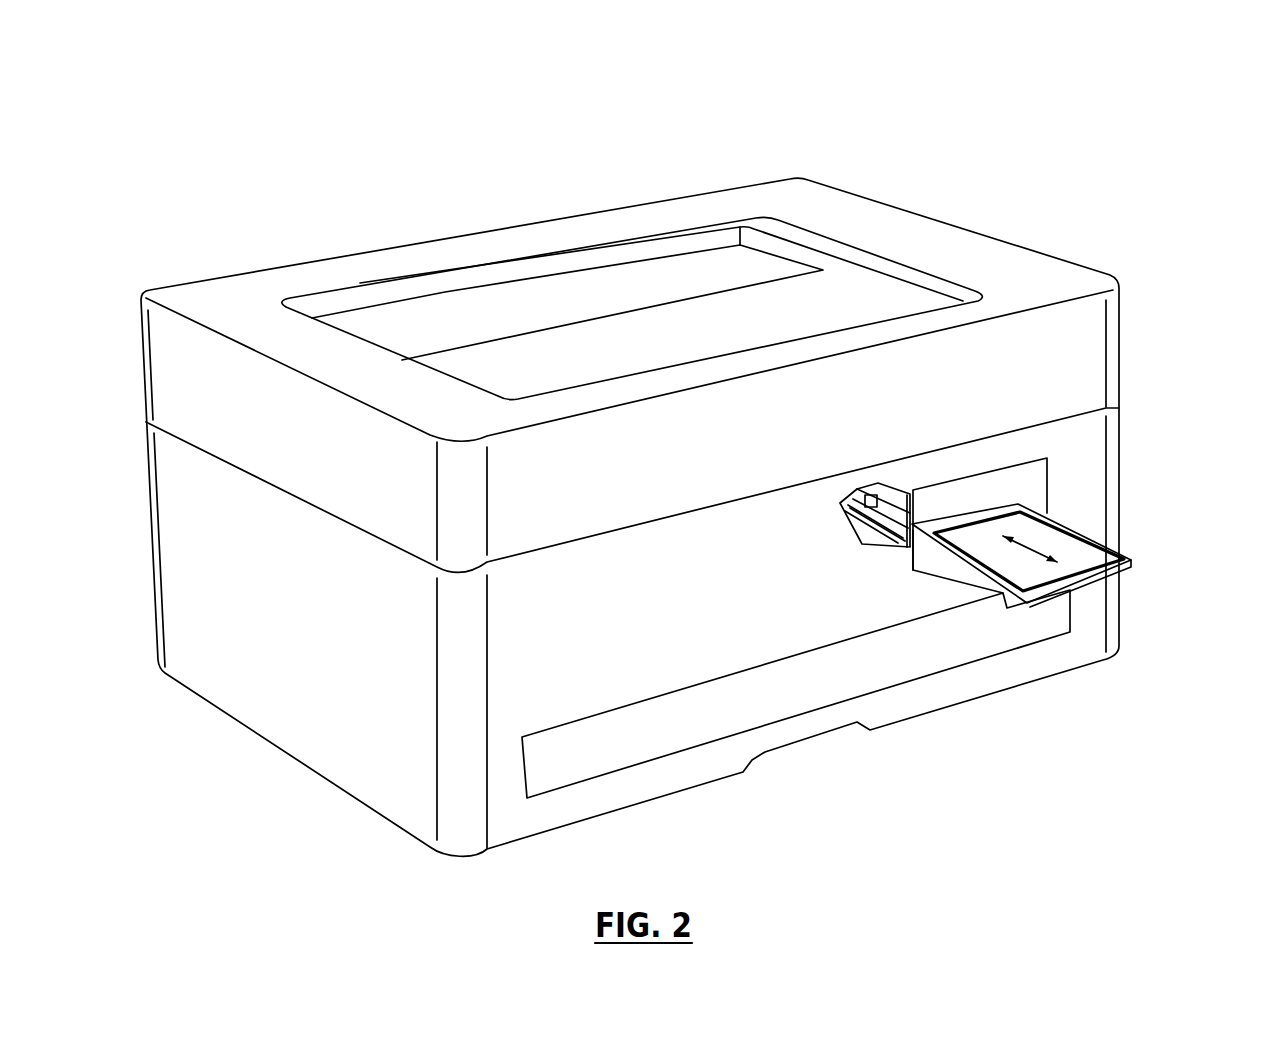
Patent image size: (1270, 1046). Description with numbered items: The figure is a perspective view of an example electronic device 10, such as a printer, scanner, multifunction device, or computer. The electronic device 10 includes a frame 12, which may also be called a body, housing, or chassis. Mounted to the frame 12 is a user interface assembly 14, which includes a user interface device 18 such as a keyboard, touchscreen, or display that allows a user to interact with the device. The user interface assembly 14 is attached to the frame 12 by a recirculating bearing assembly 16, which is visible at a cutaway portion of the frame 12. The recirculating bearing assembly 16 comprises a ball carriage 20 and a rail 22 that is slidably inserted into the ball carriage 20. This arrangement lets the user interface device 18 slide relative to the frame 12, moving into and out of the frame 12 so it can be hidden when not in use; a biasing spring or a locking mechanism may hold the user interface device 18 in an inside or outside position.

The electronic device 10 is at (298, 125).
The frame 12 is at (1077, 443).
The user interface assembly 14 is at (1098, 604).
The recirculating bearing assembly 16 is at (897, 585).
The user interface device 18 is at (1067, 553).
The ball carriage 20 is at (900, 538).
The rail 22 is at (907, 546).